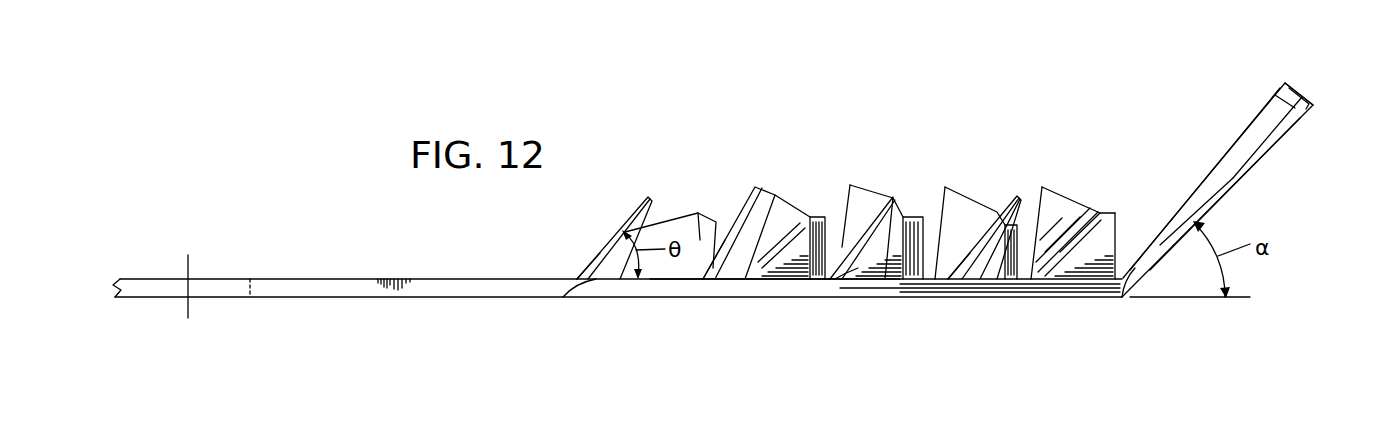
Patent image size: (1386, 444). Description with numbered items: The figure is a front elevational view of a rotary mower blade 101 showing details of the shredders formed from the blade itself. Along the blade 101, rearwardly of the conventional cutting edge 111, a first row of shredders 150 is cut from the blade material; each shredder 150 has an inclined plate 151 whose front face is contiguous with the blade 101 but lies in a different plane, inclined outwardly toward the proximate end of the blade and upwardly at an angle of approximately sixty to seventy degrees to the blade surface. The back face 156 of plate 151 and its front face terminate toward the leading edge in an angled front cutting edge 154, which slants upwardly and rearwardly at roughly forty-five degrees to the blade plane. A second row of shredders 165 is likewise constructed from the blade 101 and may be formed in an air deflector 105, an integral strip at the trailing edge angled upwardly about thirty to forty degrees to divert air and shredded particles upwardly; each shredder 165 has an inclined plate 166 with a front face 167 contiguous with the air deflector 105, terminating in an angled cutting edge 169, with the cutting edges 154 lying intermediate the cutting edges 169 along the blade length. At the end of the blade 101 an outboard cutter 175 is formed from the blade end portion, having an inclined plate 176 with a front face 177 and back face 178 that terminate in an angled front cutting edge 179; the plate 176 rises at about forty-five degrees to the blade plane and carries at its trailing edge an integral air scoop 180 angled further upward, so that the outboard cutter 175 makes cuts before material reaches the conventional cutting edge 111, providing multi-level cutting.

The blade 101 is at (446, 309).
The air deflector 105 is at (1103, 235).
The conventional cutting edge 111 is at (763, 292).
The shredders 150 is at (644, 190).
The inclined plate 151 is at (756, 184).
The angled front cutting edge 154 is at (608, 243).
The back face 156 is at (614, 270).
The shredders 165 is at (860, 180).
The inclined plate 166 is at (1057, 198).
The front face 167 is at (1065, 213).
The angled cutting edge 169 is at (848, 198).
The outboard cutter 175 is at (1290, 151).
The inclined plate 176 is at (1305, 105).
The front face 177 is at (1183, 212).
The back face 178 is at (1238, 188).
The angled front cutting edge 179 is at (1245, 163).
The air scoop 180 is at (1275, 108).